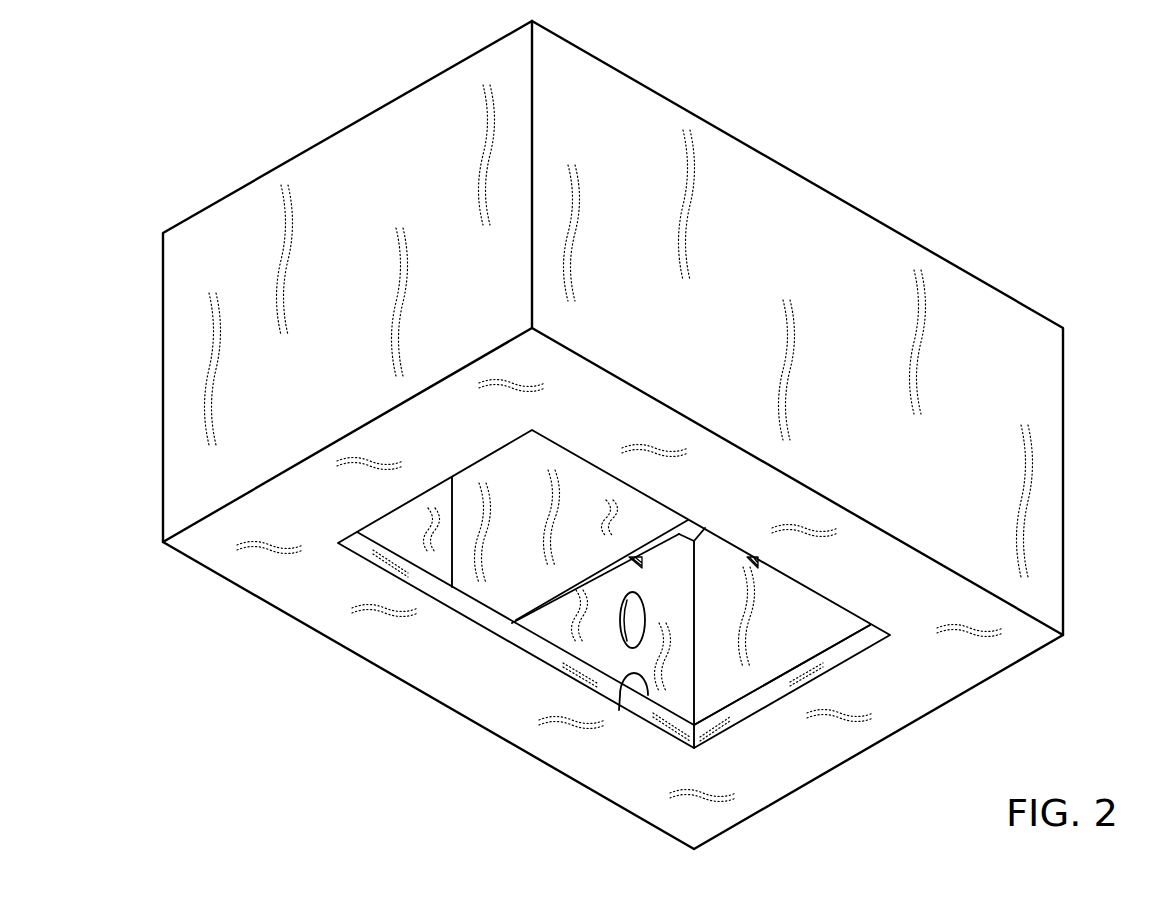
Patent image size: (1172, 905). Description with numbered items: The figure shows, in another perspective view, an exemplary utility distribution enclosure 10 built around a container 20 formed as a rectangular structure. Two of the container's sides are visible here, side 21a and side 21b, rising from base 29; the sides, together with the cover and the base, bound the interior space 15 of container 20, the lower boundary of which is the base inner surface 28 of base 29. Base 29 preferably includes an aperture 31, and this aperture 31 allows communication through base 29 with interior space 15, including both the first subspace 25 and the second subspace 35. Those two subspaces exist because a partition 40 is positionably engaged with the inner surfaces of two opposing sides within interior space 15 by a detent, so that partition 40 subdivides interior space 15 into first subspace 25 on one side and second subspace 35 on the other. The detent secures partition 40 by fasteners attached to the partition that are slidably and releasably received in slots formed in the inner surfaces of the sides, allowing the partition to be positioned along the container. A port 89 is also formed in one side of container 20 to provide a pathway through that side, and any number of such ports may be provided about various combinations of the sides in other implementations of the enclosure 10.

The utility distribution enclosure 10 is at (1083, 163).
The container 20 is at (1065, 420).
The side 21a is at (823, 207).
The side 21b is at (325, 165).
The base 29 is at (522, 738).
The interior space 15 is at (657, 582).
The first subspace 25 is at (506, 567).
The second subspace 35 is at (782, 648).
The partition 40 is at (524, 590).
The aperture 31 is at (722, 692).
The port 89 is at (637, 616).
The base inner surface 28 is at (619, 710).